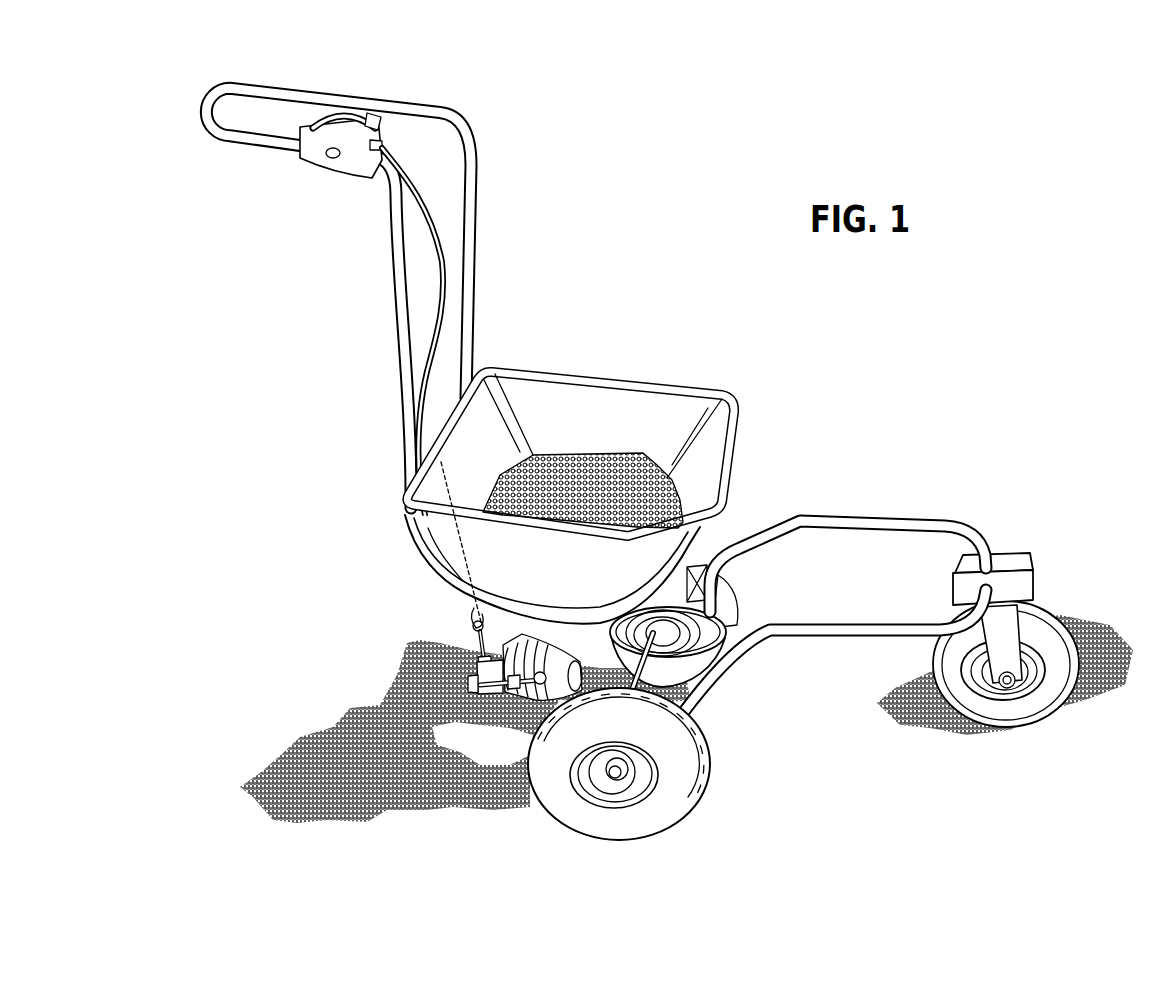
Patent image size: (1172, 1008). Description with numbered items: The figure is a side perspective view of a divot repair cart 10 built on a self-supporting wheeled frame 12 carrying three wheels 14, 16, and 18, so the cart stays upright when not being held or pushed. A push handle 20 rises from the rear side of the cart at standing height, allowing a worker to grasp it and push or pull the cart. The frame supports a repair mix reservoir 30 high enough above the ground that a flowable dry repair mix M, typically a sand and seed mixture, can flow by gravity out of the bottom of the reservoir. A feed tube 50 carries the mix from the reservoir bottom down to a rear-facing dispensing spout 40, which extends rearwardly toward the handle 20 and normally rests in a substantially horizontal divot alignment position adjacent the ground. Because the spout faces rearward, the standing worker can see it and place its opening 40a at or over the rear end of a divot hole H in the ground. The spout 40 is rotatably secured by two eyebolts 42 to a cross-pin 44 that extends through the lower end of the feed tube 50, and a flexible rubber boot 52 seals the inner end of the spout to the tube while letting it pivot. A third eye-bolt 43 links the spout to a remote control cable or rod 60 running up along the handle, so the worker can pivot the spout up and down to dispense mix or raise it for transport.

The divot repair cart 10 is at (643, 456).
The wheeled frame 12 is at (822, 515).
The wheel 14 is at (1065, 635).
The wheel 16 is at (680, 772).
The wheel 18 is at (712, 622).
The push handle 20 is at (207, 103).
The repair mix reservoir 30 is at (607, 392).
The repair mix M is at (628, 455).
The dispensing spout 40 is at (483, 662).
The spout opening 40a is at (470, 683).
The eyebolt 42 is at (505, 660).
The third eye-bolt 43 is at (470, 612).
The cross-pin 44 is at (533, 685).
The feed tube 50 is at (600, 642).
The rubber boot 52 is at (517, 690).
The remote control cable or rod 60 is at (445, 262).
The divot hole H is at (463, 743).